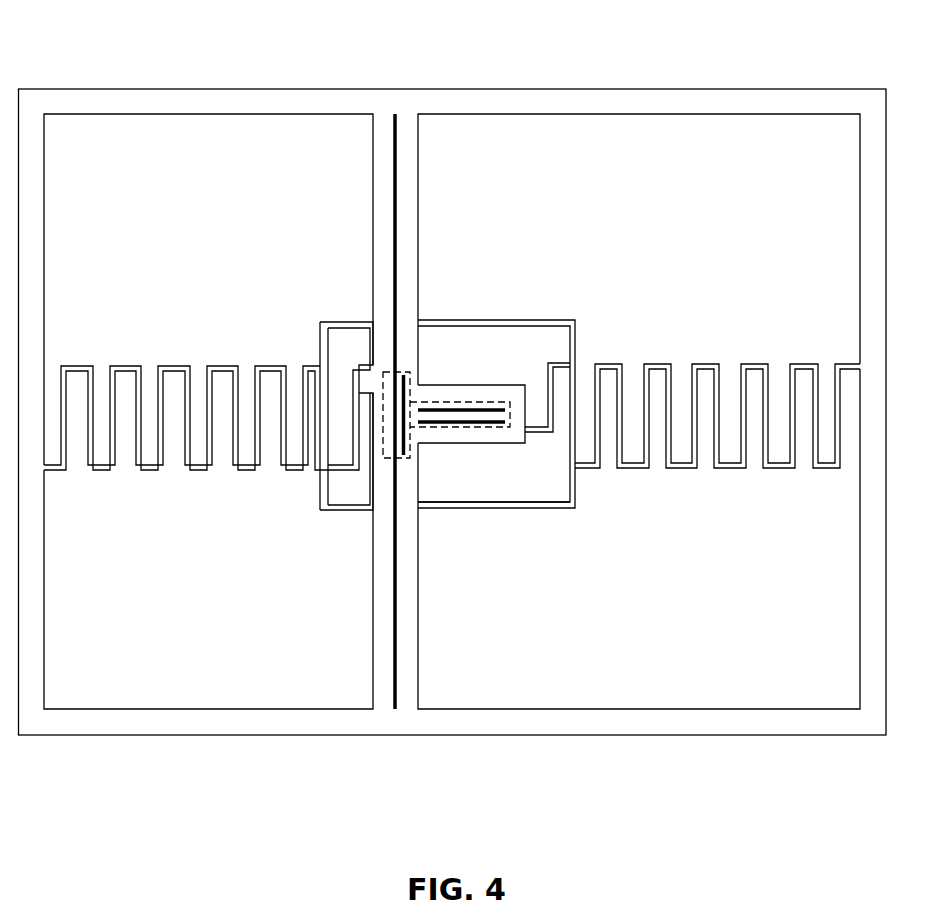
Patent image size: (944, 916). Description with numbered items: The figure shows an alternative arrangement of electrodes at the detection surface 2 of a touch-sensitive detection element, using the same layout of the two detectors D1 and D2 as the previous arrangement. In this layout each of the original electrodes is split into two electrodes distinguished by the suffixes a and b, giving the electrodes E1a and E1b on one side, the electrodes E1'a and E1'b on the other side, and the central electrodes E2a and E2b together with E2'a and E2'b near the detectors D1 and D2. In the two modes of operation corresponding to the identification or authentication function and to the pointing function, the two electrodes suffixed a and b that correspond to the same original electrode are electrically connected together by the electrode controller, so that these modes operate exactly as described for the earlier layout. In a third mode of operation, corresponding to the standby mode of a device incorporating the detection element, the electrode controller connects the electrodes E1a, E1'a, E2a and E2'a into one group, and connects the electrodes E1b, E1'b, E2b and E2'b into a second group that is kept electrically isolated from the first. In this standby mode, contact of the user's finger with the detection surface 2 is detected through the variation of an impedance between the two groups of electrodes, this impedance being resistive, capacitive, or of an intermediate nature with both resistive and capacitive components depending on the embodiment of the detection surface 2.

The detection surface 2 is at (568, 88).
The detector D1 is at (392, 712).
The detector D2 is at (502, 427).
The electrode E1a is at (152, 157).
The electrode E1b is at (155, 683).
The electrode E1'a is at (639, 246).
The electrode E1'b is at (639, 585).
The electrode E2a is at (342, 343).
The electrode E2b is at (340, 487).
The electrode E2'a is at (496, 384).
The electrode E2'b is at (494, 506).